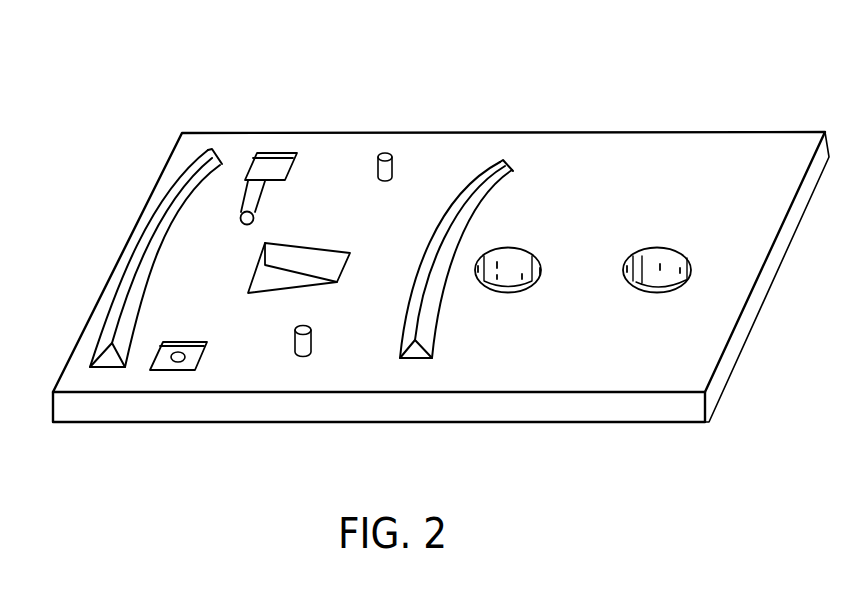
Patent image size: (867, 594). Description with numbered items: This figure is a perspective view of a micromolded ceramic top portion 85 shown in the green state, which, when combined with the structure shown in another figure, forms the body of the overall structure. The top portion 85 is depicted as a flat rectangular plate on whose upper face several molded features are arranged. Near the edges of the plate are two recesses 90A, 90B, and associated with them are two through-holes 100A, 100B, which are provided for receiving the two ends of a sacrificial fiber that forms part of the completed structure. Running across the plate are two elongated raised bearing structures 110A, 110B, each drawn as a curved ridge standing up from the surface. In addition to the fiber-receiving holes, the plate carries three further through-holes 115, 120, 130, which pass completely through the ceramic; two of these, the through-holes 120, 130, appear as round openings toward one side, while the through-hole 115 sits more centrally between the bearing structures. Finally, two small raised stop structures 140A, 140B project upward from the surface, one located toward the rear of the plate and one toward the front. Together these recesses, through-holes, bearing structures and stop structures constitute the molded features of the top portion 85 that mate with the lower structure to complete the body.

The micromolded ceramic top portion 85 is at (624, 103).
The raised bearing structure 110A is at (152, 225).
The raised bearing structure 110B is at (458, 183).
The recess 90A is at (277, 153).
The recess 90B is at (183, 371).
The through-hole 100A is at (240, 214).
The through-hole 100B is at (183, 349).
The through-hole 115 is at (310, 262).
The through-hole 120 is at (517, 260).
The through-hole 130 is at (646, 290).
The raised stop structure 140A is at (393, 163).
The raised stop structure 140B is at (294, 348).